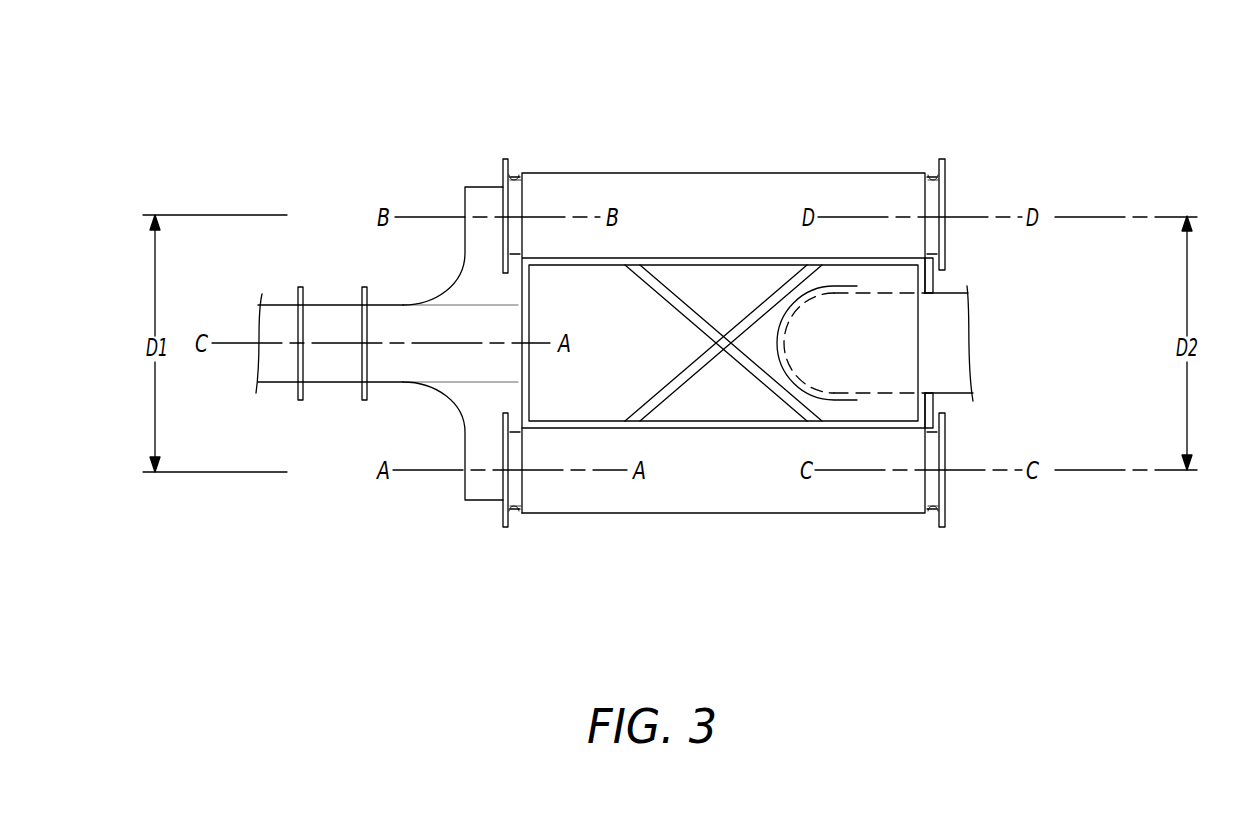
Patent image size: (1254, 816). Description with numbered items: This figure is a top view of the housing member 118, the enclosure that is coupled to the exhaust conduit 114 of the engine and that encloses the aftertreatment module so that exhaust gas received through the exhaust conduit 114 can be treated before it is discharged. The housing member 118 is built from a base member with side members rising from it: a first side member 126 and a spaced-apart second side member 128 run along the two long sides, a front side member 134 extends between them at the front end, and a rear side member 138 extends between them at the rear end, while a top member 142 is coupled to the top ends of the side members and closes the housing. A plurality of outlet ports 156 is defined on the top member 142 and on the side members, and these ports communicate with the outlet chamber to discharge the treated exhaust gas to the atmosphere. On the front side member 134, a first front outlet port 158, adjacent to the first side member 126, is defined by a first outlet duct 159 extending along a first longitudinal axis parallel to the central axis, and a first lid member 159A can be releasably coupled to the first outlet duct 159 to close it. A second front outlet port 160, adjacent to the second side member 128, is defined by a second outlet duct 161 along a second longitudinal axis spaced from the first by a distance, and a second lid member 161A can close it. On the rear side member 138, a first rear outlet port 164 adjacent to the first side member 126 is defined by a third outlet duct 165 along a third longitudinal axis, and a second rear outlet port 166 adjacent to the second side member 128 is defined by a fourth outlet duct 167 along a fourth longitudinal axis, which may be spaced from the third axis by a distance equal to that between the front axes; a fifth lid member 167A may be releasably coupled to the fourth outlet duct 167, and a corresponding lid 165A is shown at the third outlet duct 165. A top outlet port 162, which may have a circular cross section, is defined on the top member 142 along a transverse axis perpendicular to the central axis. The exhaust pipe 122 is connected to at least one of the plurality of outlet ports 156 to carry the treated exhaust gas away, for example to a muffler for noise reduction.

The housing member 118 is at (285, 72).
The exhaust conduit 114 is at (278, 305).
The front side member 134 is at (441, 412).
The second front outlet port 160 is at (500, 177).
The second outlet duct 161 is at (517, 172).
The second lid member 161A is at (508, 170).
The first front outlet port 158 is at (500, 507).
The first outlet duct 159 is at (514, 520).
The first lid member 159A is at (503, 527).
The second side member 128 is at (723, 172).
The first side member 126 is at (725, 514).
The top member 142 is at (620, 283).
The rear side member 138 is at (943, 280).
The fourth outlet duct 167 is at (940, 162).
The fifth lid member 167A is at (945, 160).
The second rear outlet port 166 is at (948, 178).
The third outlet duct 165 is at (936, 528).
The lower right gasket 165A is at (945, 528).
The first rear outlet port 164 is at (947, 512).
The exhaust pipe 122 is at (950, 360).
The top outlet port 162 is at (820, 300).
The plurality of outlet ports 156 is at (1078, 258).